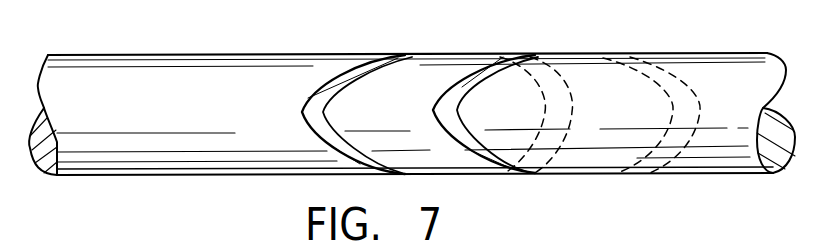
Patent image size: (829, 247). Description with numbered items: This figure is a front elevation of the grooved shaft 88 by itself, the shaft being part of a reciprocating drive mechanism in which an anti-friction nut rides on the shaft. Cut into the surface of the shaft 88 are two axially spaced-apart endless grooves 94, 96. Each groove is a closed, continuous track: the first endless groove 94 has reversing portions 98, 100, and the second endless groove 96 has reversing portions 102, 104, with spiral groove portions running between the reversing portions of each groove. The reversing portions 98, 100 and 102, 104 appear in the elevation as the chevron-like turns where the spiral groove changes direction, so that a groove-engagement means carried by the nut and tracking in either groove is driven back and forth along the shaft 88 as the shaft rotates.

The grooved shaft 88 is at (182, 68).
The endless groove 94 is at (320, 70).
The reversing portion 98 is at (315, 113).
The endless groove 96 is at (489, 53).
The reversing portion 102 is at (430, 110).
The reversing portion 100 is at (562, 115).
The reversing portion 104 is at (700, 91).